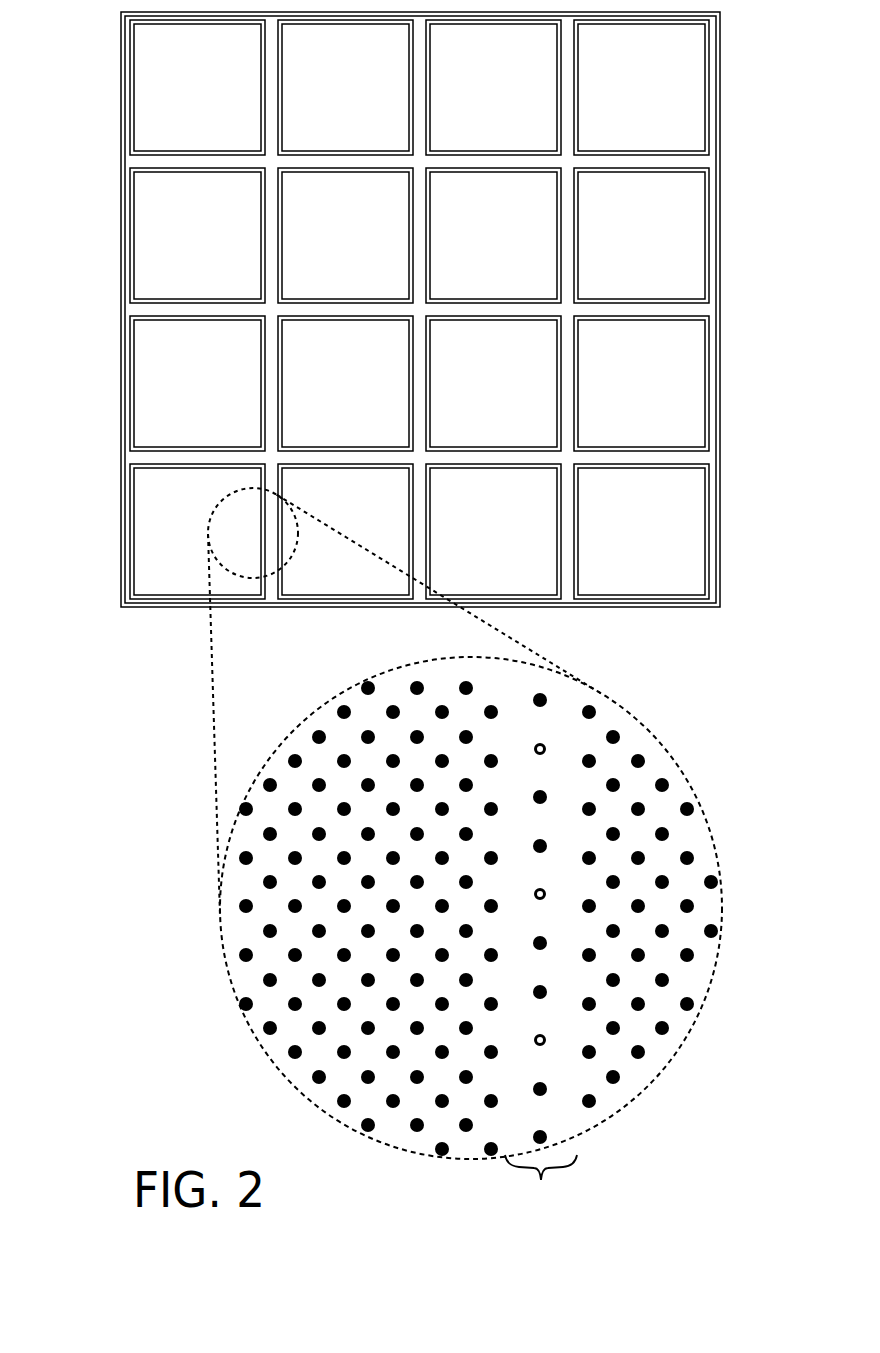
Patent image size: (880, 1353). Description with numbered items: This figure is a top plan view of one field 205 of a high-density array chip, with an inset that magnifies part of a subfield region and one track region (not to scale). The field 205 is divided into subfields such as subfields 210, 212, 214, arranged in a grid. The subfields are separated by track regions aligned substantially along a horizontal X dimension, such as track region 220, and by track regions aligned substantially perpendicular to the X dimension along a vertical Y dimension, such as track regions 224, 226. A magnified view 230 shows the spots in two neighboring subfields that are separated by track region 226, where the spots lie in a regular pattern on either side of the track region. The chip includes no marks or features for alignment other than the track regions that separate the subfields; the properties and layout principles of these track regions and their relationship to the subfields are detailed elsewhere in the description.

The field 205 is at (117, 415).
The subfield 210 is at (169, 246).
The subfield 212 is at (323, 246).
The subfield 214 is at (467, 246).
The track region 220 is at (690, 458).
The track region 224 is at (565, 587).
The track region 226 is at (270, 557).
The magnified view 230 is at (667, 753).